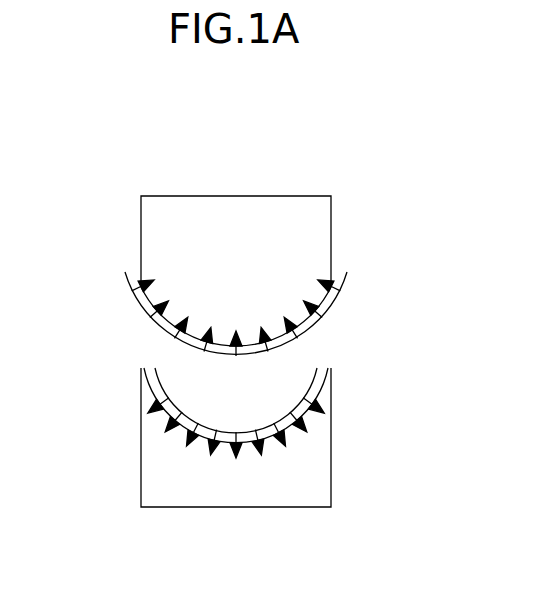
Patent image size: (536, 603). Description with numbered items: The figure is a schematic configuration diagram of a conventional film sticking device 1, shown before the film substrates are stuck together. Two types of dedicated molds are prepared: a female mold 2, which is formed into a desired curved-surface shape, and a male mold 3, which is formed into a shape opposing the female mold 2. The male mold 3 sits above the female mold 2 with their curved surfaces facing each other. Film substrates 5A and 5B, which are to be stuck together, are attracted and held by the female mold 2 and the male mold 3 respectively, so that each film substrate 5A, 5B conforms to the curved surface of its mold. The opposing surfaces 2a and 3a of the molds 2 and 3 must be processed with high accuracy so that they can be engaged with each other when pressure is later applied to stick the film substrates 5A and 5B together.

The optical element molding assembly 1 is at (323, 111).
The female mold 2 is at (226, 492).
The surface of female mold 2a is at (225, 432).
The male mold 3 is at (250, 216).
The surface of male mold 3a is at (316, 328).
The film substrate 5A is at (160, 382).
The film substrate 5B is at (128, 297).